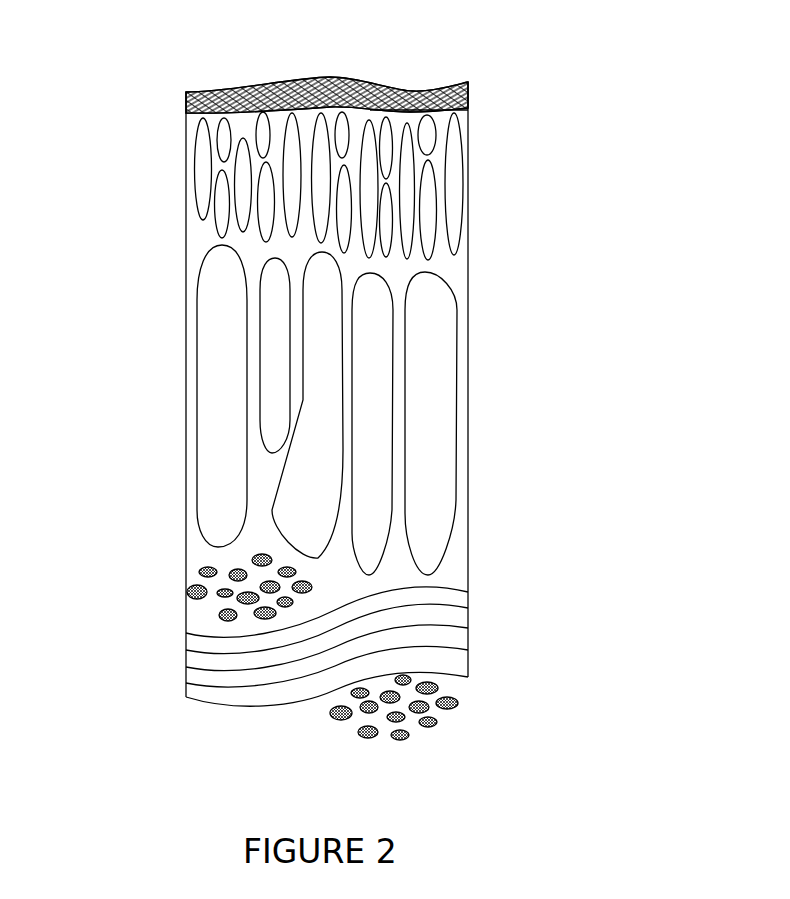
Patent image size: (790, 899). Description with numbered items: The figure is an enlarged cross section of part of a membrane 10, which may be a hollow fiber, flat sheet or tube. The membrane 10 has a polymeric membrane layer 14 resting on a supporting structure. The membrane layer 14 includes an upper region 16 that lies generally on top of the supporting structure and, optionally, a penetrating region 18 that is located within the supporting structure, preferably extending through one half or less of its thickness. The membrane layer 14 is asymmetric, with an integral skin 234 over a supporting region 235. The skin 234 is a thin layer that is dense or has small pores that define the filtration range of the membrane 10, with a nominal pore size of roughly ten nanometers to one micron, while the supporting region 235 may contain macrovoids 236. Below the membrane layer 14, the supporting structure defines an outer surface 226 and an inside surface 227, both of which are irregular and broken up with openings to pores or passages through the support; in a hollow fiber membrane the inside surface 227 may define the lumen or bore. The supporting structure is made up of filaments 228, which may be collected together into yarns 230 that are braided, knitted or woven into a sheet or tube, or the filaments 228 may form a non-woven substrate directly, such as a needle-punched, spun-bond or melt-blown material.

The membrane 10 is at (540, 86).
The membrane layer 14 is at (497, 78).
The upper region 16 is at (475, 533).
The penetrating region 18 is at (475, 592).
The outer surface 226 is at (165, 576).
The inside surface 227 is at (230, 730).
The filaments 228 is at (225, 617).
The yarns 230 is at (182, 722).
The skin 234 is at (168, 120).
The supporting region 235 is at (168, 120).
The macrovoids 236 is at (440, 440).